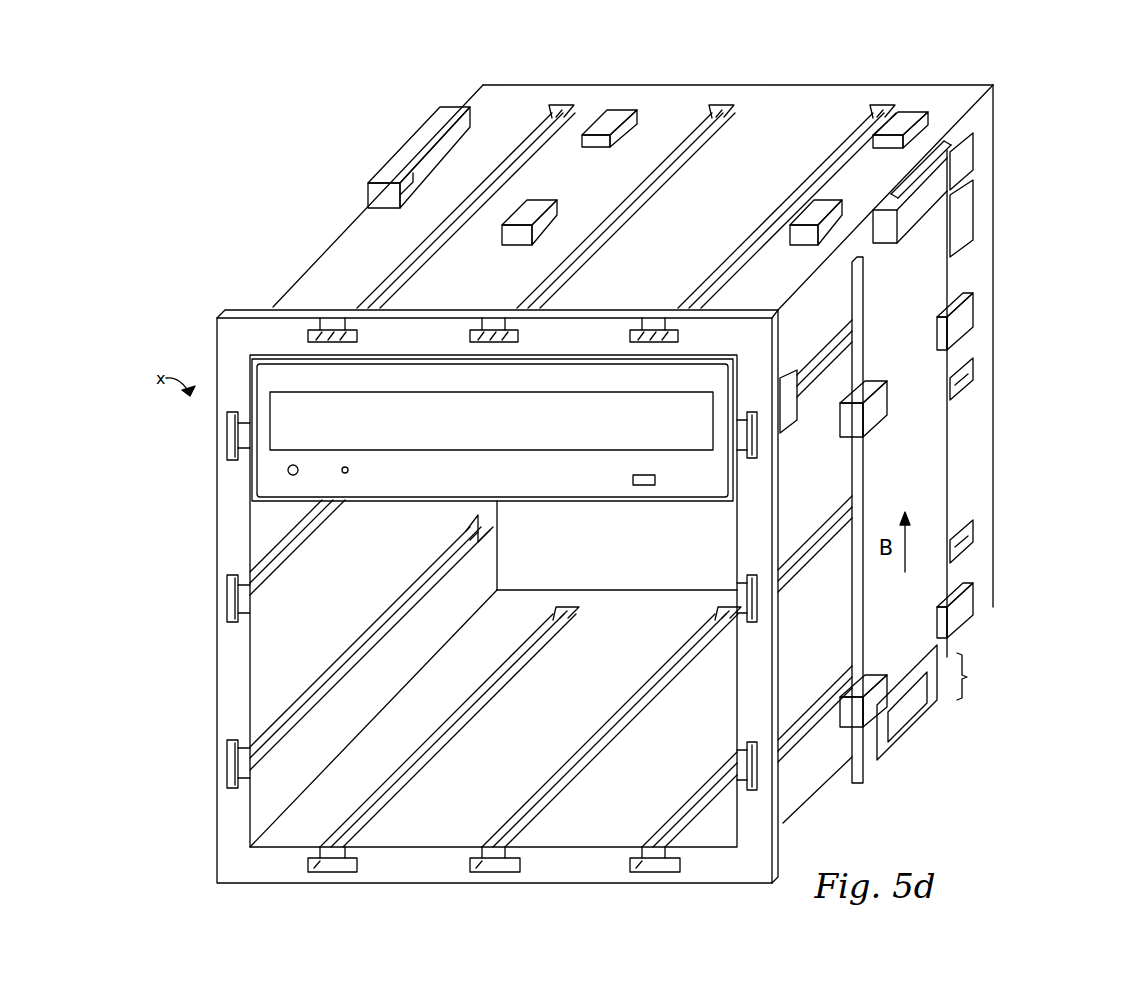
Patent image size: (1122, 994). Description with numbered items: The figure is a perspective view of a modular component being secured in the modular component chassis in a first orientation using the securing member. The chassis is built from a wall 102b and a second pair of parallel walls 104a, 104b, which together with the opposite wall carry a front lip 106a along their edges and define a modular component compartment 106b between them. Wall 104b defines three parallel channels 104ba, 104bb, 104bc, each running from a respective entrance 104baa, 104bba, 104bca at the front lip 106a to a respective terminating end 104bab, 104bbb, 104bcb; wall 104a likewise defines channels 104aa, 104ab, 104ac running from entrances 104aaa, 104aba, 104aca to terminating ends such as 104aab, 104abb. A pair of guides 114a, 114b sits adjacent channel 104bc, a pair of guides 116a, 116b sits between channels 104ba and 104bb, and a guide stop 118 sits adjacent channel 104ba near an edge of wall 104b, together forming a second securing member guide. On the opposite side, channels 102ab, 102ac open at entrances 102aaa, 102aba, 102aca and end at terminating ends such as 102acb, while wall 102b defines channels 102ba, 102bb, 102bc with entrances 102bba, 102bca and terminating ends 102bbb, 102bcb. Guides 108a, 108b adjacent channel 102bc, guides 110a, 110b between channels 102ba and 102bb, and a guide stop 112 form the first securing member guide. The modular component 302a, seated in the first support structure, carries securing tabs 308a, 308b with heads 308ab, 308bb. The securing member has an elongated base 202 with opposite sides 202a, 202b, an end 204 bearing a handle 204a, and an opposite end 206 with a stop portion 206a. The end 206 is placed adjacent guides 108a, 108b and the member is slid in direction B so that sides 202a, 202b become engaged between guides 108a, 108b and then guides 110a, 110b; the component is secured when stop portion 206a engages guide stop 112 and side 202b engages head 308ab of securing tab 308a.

The guide stop 118 is at (425, 135).
The wall 104b is at (360, 243).
The channel 104ba is at (530, 120).
The terminating end 104bab is at (562, 120).
The entrance 104baa is at (330, 330).
The channel 104bb is at (700, 110).
The terminating end 104bbb is at (728, 118).
The entrance 104bba is at (495, 330).
The channel 104bc is at (820, 140).
The terminating end 104bcb is at (877, 102).
The entrance 104bca is at (655, 330).
The guide 116b is at (592, 112).
The guide 116a is at (538, 232).
The guide 114b is at (945, 118).
The guide 114a is at (805, 235).
The guide stop 112 is at (905, 215).
The end 206 is at (853, 260).
The stop portion 206a is at (912, 165).
The elongated base 202 is at (940, 505).
The side 202a is at (860, 300).
The side 202b is at (960, 420).
The head 308ab is at (957, 190).
The securing tab 308a is at (983, 211).
The wall 102b is at (980, 270).
The guide 110b is at (960, 318).
The guide 108b is at (962, 612).
The terminating end 102bbb is at (967, 372).
The terminating end 102bcb is at (967, 535).
The end 204 is at (920, 735).
The handle 204a is at (990, 676).
The channel 102ba is at (832, 345).
The channel 102bb is at (822, 560).
The channel 102bc is at (820, 790).
The securing tab 308b is at (803, 418).
The guide 110a is at (880, 410).
The guide 108a is at (878, 700).
The front lip 106a is at (228, 487).
The entrance 102aaa is at (227, 438).
The entrance 102aba is at (227, 598).
The entrance 102aca is at (227, 765).
The channel 102ab is at (300, 560).
The channel 102ac is at (345, 660).
The terminating end 102acb is at (485, 540).
The drive unit 302a is at (430, 505).
The modular component compartment 106b is at (658, 535).
The head 308bb is at (782, 375).
The entrance 102bba is at (737, 587).
The entrance 102bca is at (737, 772).
The wall 104a is at (556, 832).
The channel 104aa is at (437, 705).
The terminating end 104aab is at (565, 615).
The entrance 104aaa is at (335, 875).
The channel 104ab is at (540, 765).
The terminating end 104abb is at (712, 630).
The entrance 104aba is at (495, 875).
The channel 104ac is at (655, 830).
The entrance 104aca is at (660, 875).